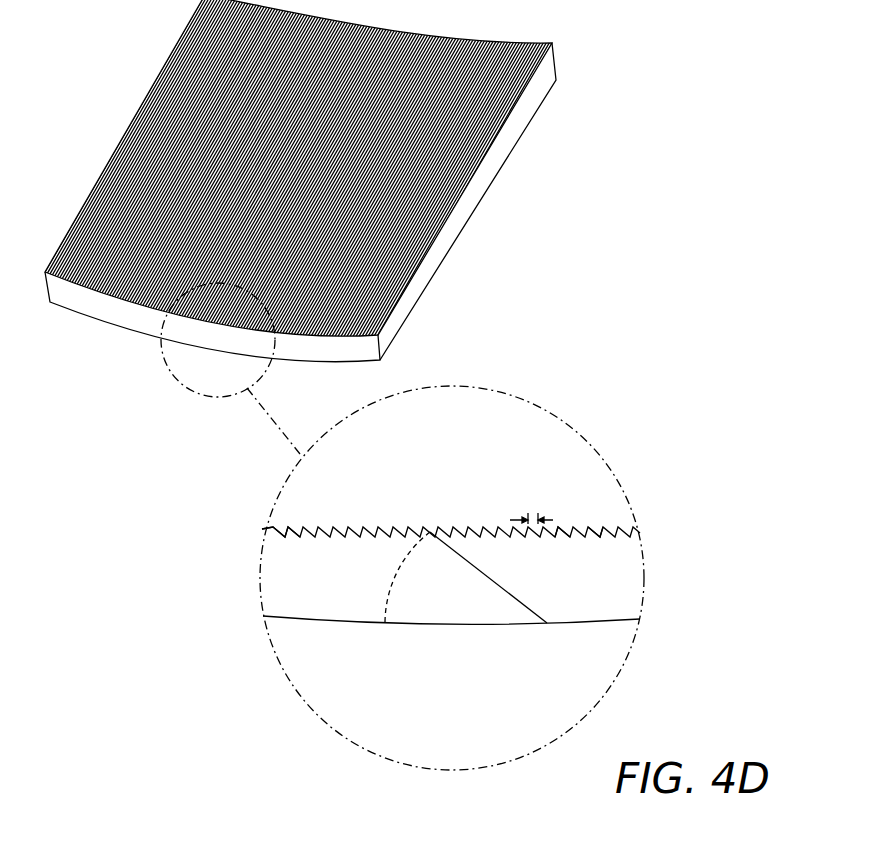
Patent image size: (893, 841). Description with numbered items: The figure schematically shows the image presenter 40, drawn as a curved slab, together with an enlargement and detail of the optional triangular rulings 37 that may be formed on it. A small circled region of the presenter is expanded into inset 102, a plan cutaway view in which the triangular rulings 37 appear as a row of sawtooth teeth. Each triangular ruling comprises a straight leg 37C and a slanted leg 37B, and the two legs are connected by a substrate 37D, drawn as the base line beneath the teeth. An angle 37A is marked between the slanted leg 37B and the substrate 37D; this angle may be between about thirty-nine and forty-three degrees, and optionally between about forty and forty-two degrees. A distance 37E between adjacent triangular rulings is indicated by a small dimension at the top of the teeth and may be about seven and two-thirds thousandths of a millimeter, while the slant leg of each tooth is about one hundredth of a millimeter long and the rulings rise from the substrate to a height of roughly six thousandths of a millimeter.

The image presenter 40 is at (467, 210).
The inset 102 is at (277, 528).
The triangular rulings 37 is at (445, 507).
The angle 37A is at (400, 567).
The slanted leg 37B is at (558, 527).
The straight leg 37C is at (601, 537).
The substrate 37D is at (580, 595).
The distance 37E is at (528, 513).